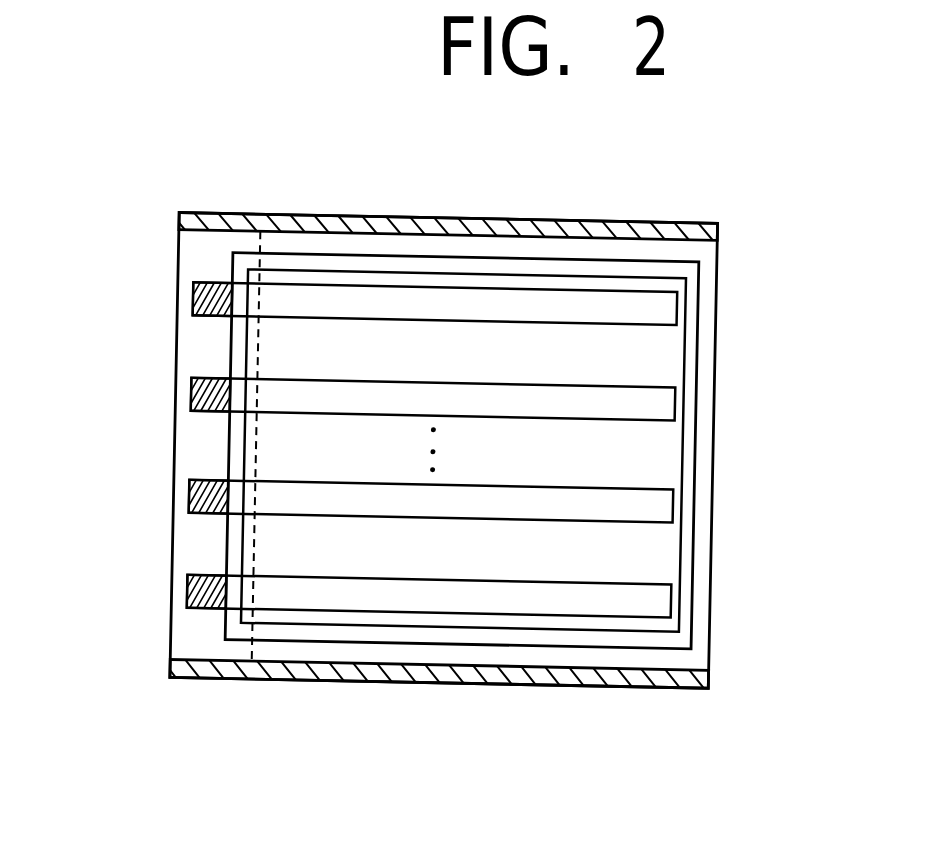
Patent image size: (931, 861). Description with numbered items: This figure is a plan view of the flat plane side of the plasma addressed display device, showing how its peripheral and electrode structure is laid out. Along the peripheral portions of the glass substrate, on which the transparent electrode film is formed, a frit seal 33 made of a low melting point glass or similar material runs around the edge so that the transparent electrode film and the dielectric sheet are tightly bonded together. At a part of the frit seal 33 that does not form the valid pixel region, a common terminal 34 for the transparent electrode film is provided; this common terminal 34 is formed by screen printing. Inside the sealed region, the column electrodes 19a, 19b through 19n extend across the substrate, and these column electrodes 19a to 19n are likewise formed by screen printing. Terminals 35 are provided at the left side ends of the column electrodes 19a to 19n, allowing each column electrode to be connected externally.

The column electrode 19a is at (680, 307).
The column electrode 19b is at (675, 403).
The column electrode 19n is at (673, 600).
The frit seal 33 is at (690, 458).
The common terminal 34 is at (674, 231).
The terminals 35 is at (190, 578).